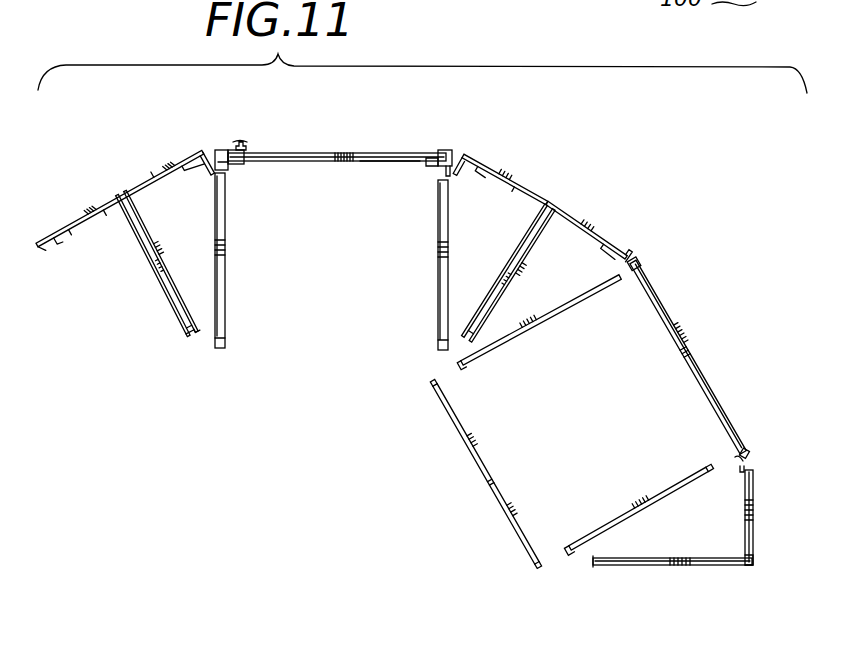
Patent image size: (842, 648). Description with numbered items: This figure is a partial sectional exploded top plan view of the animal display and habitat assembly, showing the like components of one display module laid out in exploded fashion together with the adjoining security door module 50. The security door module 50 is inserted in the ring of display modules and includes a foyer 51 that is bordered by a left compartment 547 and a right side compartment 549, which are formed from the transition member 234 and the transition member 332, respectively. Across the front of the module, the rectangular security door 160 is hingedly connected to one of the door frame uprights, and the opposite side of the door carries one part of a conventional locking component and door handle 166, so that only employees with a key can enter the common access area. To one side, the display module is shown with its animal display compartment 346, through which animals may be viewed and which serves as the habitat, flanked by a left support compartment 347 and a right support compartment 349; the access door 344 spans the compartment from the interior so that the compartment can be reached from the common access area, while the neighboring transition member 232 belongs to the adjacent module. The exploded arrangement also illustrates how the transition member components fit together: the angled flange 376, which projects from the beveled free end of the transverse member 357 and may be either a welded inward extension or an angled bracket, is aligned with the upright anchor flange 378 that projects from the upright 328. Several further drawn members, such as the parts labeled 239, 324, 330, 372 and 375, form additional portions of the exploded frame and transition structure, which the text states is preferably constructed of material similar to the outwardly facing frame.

The security door module 50 is at (365, 151).
The foyer 51 is at (393, 180).
The security door 160 is at (421, 152).
The locking component and door handle 166 is at (241, 141).
The transition member 232 is at (761, 549).
The transition member 234 is at (561, 201).
The bottom bar 239 is at (637, 566).
The diagonal strut 324 is at (665, 287).
The upright 328 is at (740, 449).
The upper connector 330 is at (640, 264).
The transition member 332 is at (128, 180).
The access door 344 is at (490, 492).
The animal display compartment 346 is at (508, 473).
The left support compartment 347 is at (684, 535).
The right support compartment 349 is at (573, 288).
The transverse member 357 is at (750, 503).
The strut lower portion 372 is at (704, 408).
The bar top end 375 is at (741, 478).
The angled flange 376 is at (745, 459).
The upright anchor flange 378 is at (740, 465).
The left side support compartment 547 is at (505, 235).
The right side support compartment 549 is at (201, 229).